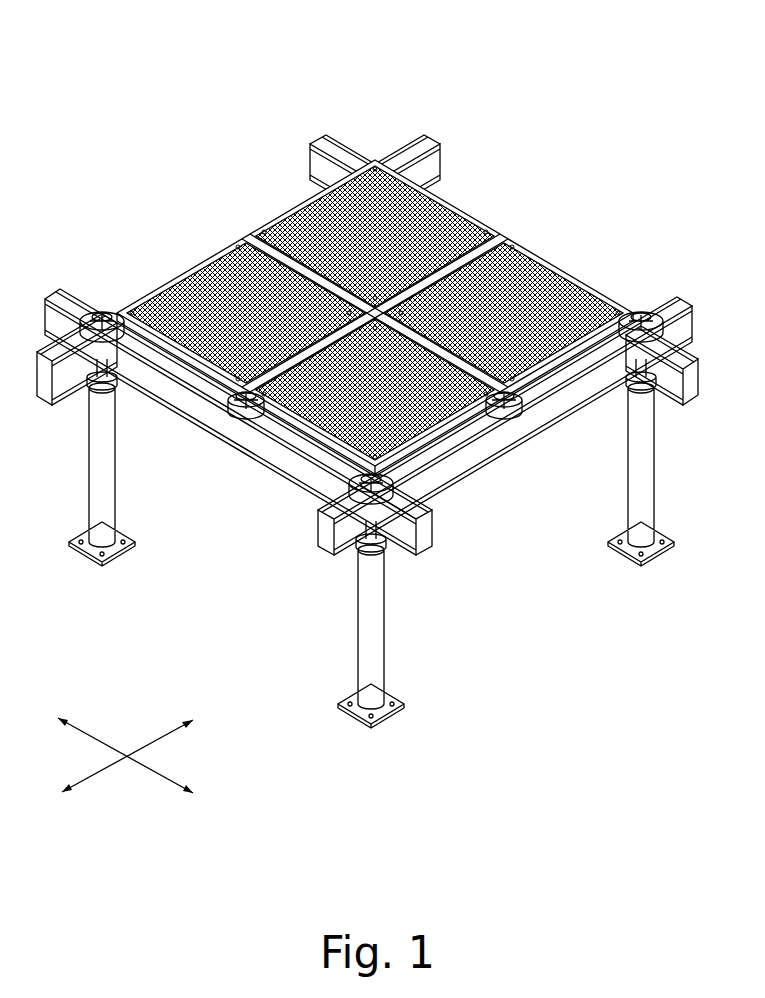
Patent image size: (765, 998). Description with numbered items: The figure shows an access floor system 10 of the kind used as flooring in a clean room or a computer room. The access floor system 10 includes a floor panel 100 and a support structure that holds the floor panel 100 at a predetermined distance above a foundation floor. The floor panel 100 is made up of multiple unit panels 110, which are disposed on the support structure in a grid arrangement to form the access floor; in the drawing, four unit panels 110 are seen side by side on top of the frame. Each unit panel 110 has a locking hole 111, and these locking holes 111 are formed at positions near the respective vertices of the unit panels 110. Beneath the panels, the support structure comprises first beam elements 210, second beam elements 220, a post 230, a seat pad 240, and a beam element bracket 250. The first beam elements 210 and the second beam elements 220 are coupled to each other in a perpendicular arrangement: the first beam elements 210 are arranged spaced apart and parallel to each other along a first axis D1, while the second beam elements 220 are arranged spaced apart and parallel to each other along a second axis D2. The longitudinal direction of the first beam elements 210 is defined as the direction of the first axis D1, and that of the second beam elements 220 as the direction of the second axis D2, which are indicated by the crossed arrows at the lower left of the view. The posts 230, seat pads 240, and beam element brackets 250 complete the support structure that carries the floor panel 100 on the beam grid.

The access floor system 10 is at (367, 377).
The floor panel 100 is at (399, 273).
The unit panel 110 is at (568, 271).
The locking hole 111 is at (515, 235).
The first beam element 210 is at (333, 553).
The second beam element 220 is at (412, 553).
The post 230 is at (400, 640).
The seat pad 240 is at (428, 517).
The beam element bracket 250 is at (403, 487).
The first axis D1 is at (141, 741).
The second axis D2 is at (139, 768).